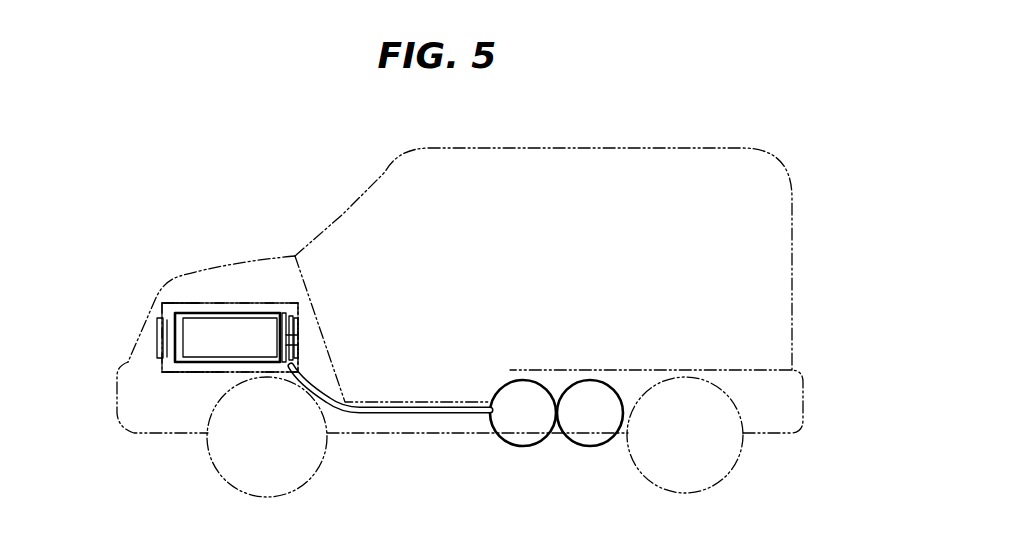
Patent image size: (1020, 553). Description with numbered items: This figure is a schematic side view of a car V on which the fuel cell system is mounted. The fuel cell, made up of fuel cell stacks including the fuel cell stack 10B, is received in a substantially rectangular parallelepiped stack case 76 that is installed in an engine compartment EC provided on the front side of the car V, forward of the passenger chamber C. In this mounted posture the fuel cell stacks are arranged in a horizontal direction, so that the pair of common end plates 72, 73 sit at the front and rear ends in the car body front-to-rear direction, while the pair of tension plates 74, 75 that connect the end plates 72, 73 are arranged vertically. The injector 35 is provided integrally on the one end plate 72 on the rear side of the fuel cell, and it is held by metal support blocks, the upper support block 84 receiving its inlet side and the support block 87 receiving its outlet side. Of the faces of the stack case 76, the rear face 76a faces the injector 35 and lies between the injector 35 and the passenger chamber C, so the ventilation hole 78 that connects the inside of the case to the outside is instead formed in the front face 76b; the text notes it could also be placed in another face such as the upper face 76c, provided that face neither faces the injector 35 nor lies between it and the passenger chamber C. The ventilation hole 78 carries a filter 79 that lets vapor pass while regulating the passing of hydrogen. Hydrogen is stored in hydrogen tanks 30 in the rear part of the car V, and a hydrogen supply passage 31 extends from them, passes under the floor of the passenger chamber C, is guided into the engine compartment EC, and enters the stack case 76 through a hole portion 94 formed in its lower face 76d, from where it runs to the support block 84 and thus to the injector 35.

The car V is at (375, 161).
The passenger chamber C is at (503, 190).
The hydrogen tanks 30 is at (525, 447).
The hydrogen supply passage 31 is at (428, 408).
The stack case 76 is at (253, 303).
The rear face 76a is at (300, 338).
The front face 76b is at (160, 312).
The upper face 76c is at (217, 303).
The lower face 76d is at (197, 373).
The ventilation hole 78 is at (157, 348).
The filter 79 is at (165, 336).
The tension plate 74 is at (197, 303).
The end plate 73 is at (183, 303).
The tension plate 75 is at (190, 369).
The engine compartment EC is at (238, 280).
The end plate 72 is at (283, 300).
The support block 84 is at (296, 322).
The injector 35 is at (299, 330).
The support block 87 is at (294, 352).
The fuel cell stack 10B is at (243, 345).
The hole portion 94 is at (277, 387).